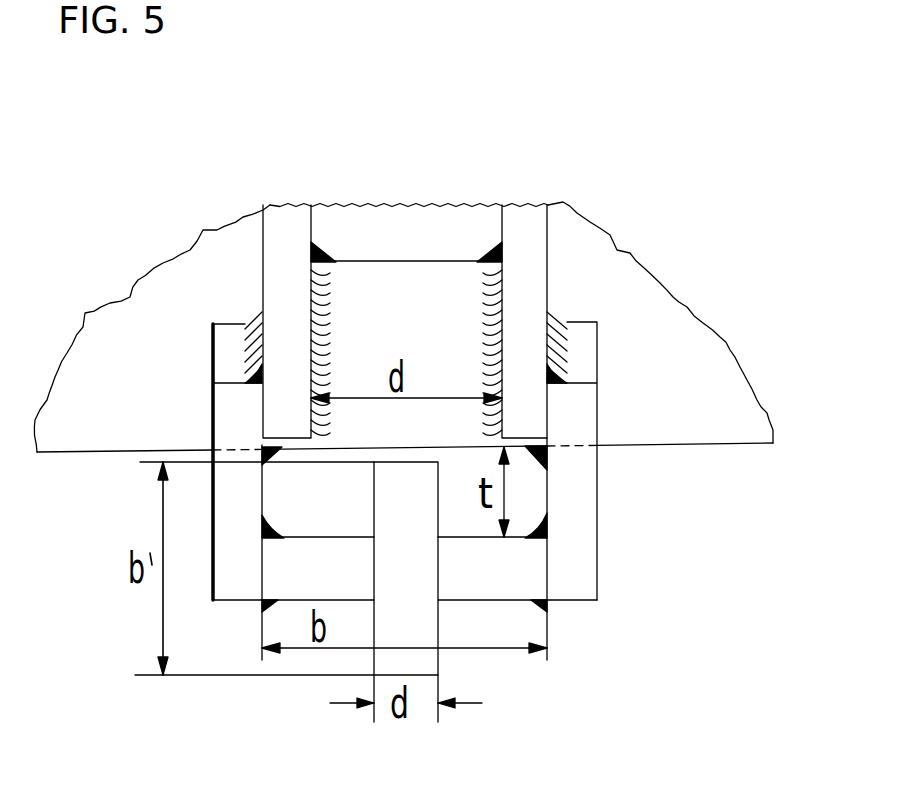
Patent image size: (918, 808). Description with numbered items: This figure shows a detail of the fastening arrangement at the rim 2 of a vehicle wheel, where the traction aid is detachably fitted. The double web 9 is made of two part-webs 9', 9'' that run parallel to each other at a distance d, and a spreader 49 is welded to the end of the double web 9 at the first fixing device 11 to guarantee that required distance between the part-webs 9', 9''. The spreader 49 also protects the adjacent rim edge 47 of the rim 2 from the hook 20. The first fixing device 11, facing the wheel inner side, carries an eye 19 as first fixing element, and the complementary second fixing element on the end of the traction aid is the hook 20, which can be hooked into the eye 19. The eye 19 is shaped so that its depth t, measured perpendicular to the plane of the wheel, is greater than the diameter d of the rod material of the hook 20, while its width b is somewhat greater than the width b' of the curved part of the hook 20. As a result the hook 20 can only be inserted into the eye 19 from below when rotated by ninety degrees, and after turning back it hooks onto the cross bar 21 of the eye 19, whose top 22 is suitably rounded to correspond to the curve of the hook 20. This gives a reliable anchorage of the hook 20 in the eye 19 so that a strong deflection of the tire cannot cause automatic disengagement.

The rim 2 is at (725, 335).
The double web 9 is at (440, 239).
The part-web 9' is at (275, 273).
The part-web 9'' is at (581, 274).
The first fixing device 11 is at (555, 283).
The spreader 49 is at (410, 285).
The eye 19 is at (312, 505).
The rim edge 47 is at (707, 445).
The top 22 is at (543, 572).
The cross bar 21 is at (472, 558).
The hook 20 is at (420, 623).